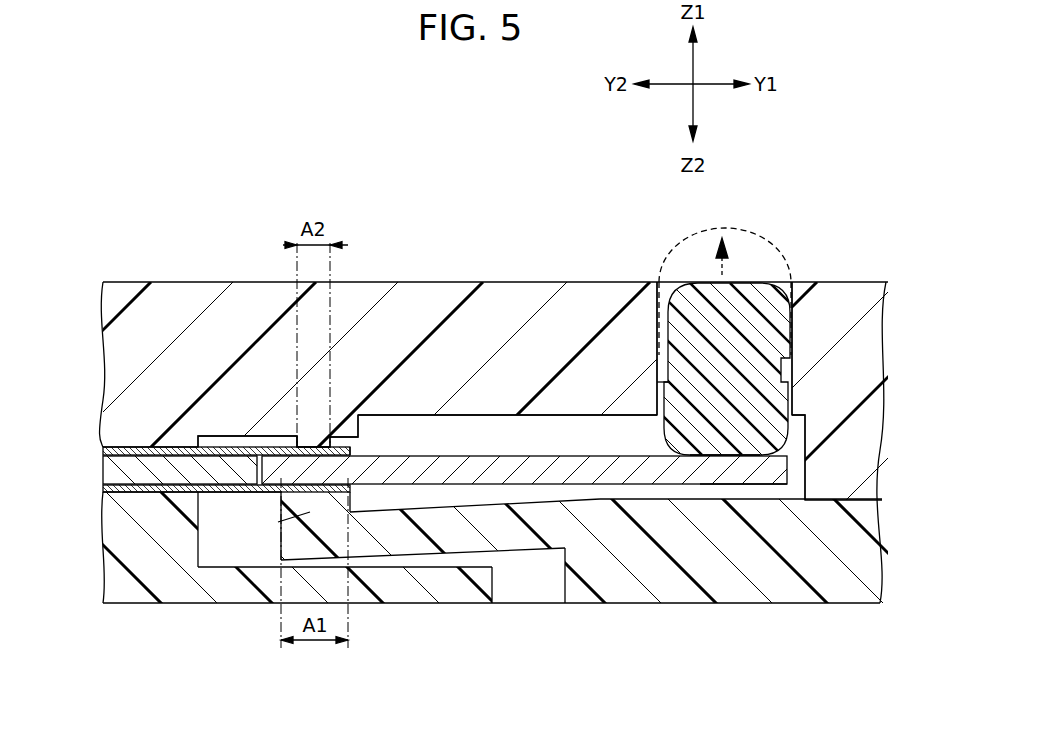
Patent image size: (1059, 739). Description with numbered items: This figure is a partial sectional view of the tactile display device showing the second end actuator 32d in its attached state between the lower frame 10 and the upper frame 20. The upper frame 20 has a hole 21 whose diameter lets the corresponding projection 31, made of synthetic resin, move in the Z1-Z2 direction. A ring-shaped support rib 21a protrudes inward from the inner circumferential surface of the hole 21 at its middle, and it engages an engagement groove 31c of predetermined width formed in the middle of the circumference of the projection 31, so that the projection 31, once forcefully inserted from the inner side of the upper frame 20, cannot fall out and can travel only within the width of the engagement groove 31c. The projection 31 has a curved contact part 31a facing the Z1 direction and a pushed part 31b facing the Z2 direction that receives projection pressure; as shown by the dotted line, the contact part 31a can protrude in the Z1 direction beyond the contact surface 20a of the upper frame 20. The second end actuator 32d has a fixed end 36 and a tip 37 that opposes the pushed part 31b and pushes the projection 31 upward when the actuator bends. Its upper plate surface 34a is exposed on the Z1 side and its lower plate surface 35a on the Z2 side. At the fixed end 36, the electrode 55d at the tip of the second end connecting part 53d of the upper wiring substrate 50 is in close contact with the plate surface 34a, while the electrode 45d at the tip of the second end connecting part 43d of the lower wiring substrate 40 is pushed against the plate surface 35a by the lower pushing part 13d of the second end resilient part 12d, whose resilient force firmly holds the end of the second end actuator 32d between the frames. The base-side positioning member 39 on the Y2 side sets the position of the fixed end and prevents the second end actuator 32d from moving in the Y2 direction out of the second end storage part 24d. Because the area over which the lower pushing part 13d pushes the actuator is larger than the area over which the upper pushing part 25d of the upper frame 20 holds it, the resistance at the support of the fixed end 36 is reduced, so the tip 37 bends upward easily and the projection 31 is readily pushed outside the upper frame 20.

The lower frame 10 is at (671, 612).
The second end resilient part 12d is at (418, 567).
The lower pushing part 13d is at (272, 496).
The upper frame 20 is at (473, 278).
The contact surface 20a is at (208, 282).
The hole 21 is at (660, 285).
The support rib 21a is at (658, 372).
The second end storage part 24d is at (442, 437).
The upper pushing part 25d is at (315, 443).
The projection 31 is at (778, 272).
The contact part 31a is at (746, 238).
The pushed part 31b is at (738, 456).
The engagement groove 31c is at (800, 400).
The second end actuator 32d is at (612, 500).
The plate surface of the first electrode layer 34a is at (512, 455).
The plate surface of the second electrode layer 35a is at (545, 490).
The fixed end 36 is at (222, 492).
The tip 37 is at (773, 494).
The base-side positioning member 39 is at (118, 466).
The lower wiring substrate 40 is at (112, 490).
The second end connecting part 43d is at (198, 558).
The electrode 45d is at (425, 528).
The upper wiring substrate 50 is at (135, 447).
The second end connecting part 53d is at (198, 436).
The electrode 55d is at (352, 455).